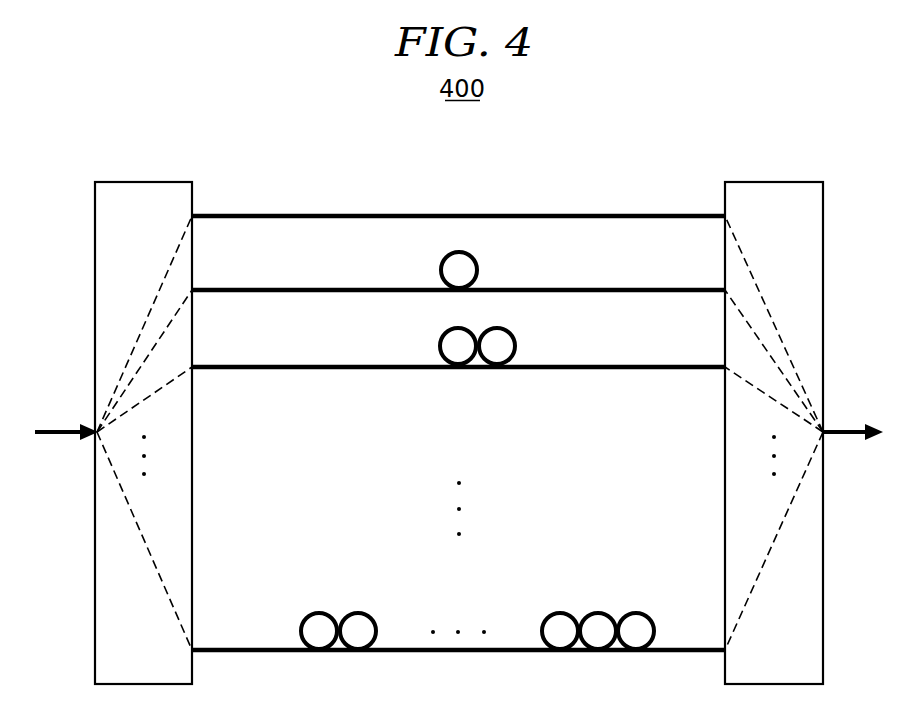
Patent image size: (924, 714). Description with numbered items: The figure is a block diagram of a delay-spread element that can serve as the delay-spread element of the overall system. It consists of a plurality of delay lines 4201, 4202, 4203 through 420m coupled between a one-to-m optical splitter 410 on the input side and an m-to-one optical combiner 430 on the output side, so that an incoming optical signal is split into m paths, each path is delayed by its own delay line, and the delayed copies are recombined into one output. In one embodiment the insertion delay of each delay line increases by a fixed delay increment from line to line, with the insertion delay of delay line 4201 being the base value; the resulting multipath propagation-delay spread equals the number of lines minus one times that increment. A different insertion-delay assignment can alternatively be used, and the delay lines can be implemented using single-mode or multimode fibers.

The one-to-m optical splitter 410 is at (132, 182).
The m-to-one optical combiner 430 is at (762, 182).
The delay line 4201 is at (550, 213).
The delay line 4202 is at (572, 287).
The delay line 4203 is at (602, 364).
The delay line 420m is at (473, 653).